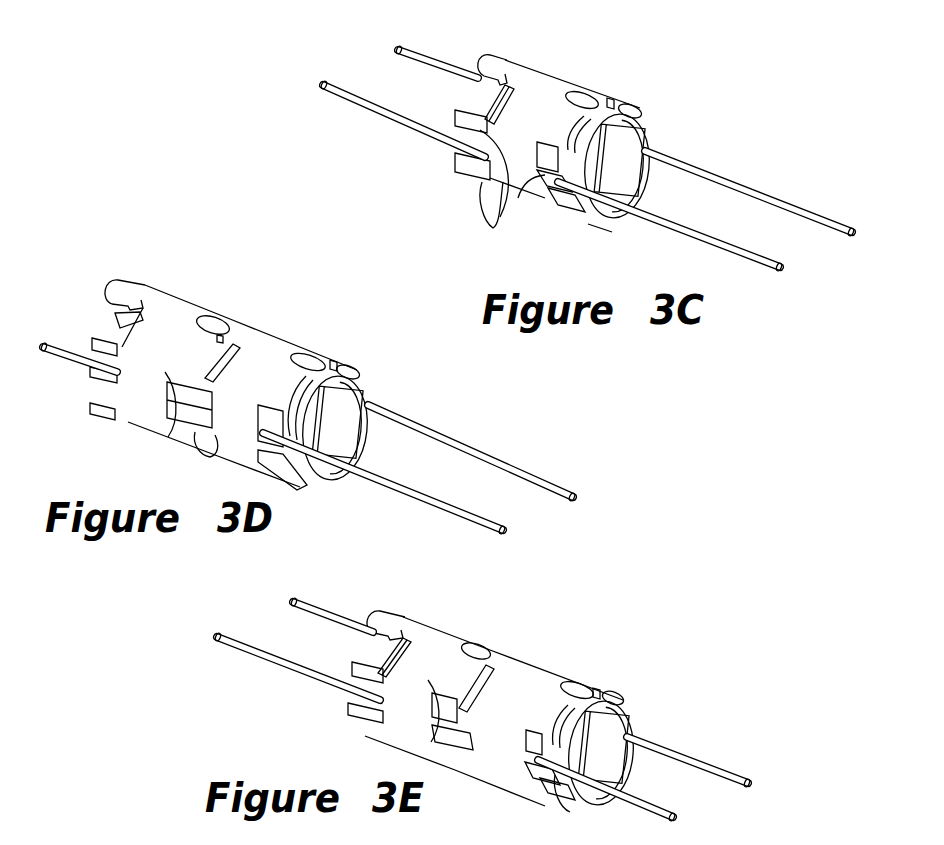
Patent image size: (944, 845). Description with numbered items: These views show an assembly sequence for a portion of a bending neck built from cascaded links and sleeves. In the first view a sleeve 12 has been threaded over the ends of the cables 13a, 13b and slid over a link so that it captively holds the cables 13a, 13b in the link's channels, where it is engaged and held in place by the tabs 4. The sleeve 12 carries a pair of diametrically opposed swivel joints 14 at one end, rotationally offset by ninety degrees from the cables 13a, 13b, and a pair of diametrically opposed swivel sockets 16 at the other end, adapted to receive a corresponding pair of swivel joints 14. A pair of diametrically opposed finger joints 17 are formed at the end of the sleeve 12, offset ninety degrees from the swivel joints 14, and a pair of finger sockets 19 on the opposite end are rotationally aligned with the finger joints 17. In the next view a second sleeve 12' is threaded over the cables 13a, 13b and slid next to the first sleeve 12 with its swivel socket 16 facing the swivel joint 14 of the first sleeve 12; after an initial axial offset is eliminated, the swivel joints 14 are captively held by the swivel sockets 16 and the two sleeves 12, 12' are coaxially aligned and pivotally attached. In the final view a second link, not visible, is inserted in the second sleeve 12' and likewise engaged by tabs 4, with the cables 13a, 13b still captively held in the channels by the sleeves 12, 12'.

In FIG. 3C, the tabs 4 is at (495, 105).
In FIG. 3E, the tabs 4 is at (397, 643).
In FIG. 3C, the sleeve 12 is at (567, 146).
In FIG. 3D, the sleeve 12 is at (283, 404).
In FIG. 3E, the sleeve 12 is at (546, 731).
In FIG. 3D, the second sleeve 12' is at (160, 367).
In FIG. 3E, the second sleeve 12' is at (419, 693).
In FIG. 3C, the cable 13a is at (747, 187).
In FIG. 3D, the cable 13a is at (508, 460).
In FIG. 3E, the cable 13a is at (700, 745).
In FIG. 3C, the cable 13b is at (697, 232).
In FIG. 3D, the cable 13b is at (493, 497).
In FIG. 3E, the cable 13b is at (660, 793).
In FIG. 3C, the swivel joints 14 is at (497, 62).
In FIG. 3D, the swivel joints 14 is at (222, 324).
In FIG. 3E, the swivel joints 14 is at (385, 615).
In FIG. 3C, the swivel sockets 16 is at (590, 97).
In FIG. 3D, the swivel sockets 16 is at (199, 312).
In FIG. 3E, the swivel sockets 16 is at (462, 645).
In FIG. 3C, the finger joints 17 is at (545, 180).
In FIG. 3C, the finger sockets 19 is at (483, 157).